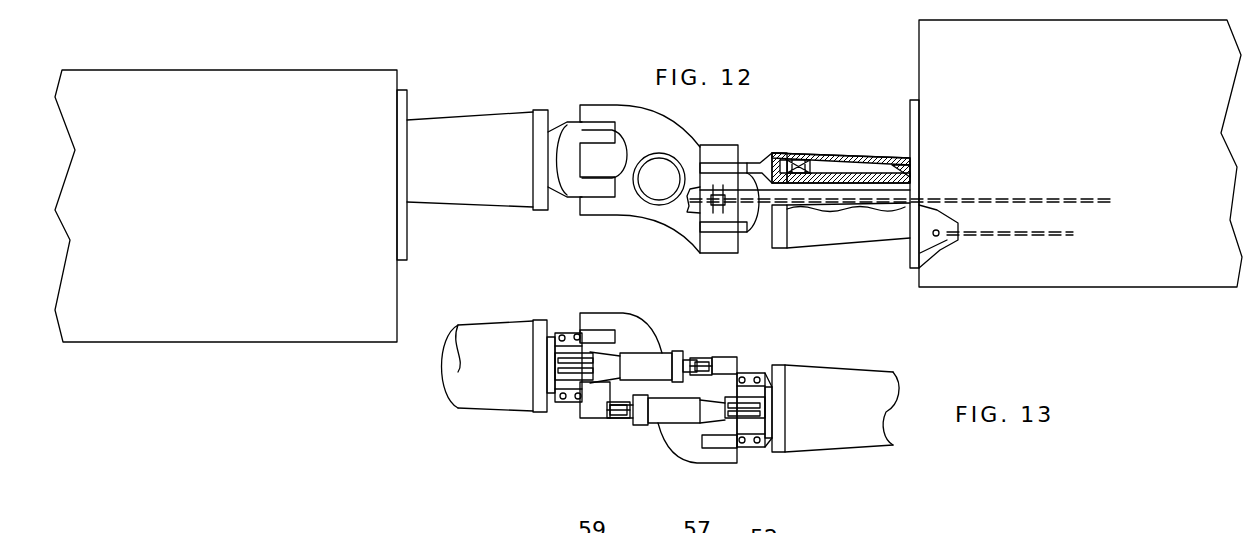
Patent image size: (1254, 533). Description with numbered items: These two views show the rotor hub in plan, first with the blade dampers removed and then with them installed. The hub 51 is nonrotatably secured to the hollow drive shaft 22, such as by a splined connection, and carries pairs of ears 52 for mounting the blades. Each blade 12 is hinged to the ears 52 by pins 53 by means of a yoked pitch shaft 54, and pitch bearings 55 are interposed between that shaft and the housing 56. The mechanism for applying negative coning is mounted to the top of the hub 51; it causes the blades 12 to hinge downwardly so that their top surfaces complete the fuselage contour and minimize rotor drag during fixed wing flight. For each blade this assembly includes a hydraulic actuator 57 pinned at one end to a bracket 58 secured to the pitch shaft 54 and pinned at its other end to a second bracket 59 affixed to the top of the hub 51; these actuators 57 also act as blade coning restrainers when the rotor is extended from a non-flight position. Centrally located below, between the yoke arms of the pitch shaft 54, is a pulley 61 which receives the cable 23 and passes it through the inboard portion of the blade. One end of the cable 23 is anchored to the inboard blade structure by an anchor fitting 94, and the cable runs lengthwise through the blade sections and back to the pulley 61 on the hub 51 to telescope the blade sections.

In FIG. 12, the blade 12 is at (264, 78).
In FIG. 12, the hollow drive shaft 22 is at (660, 204).
In FIG. 12, the cable 23 is at (880, 206).
In FIG. 12, the hub 51 is at (663, 147).
In FIG. 12, the ears 52 is at (613, 105).
In FIG. 13, the ears 52 is at (607, 313).
In FIG. 13, the pins 53 is at (597, 420).
In FIG. 12, the yoked pitch shaft 54 is at (762, 161).
In FIG. 12, the pitch bearings 55 is at (808, 153).
In FIG. 12, the housing 56 is at (827, 241).
In FIG. 13, the hydraulic actuator 57 is at (658, 357).
In FIG. 13, the bracket 58 is at (567, 336).
In FIG. 13, the second bracket 59 is at (703, 360).
In FIG. 12, the pulley 61 is at (703, 206).
In FIG. 12, the anchor fitting 94 is at (946, 244).